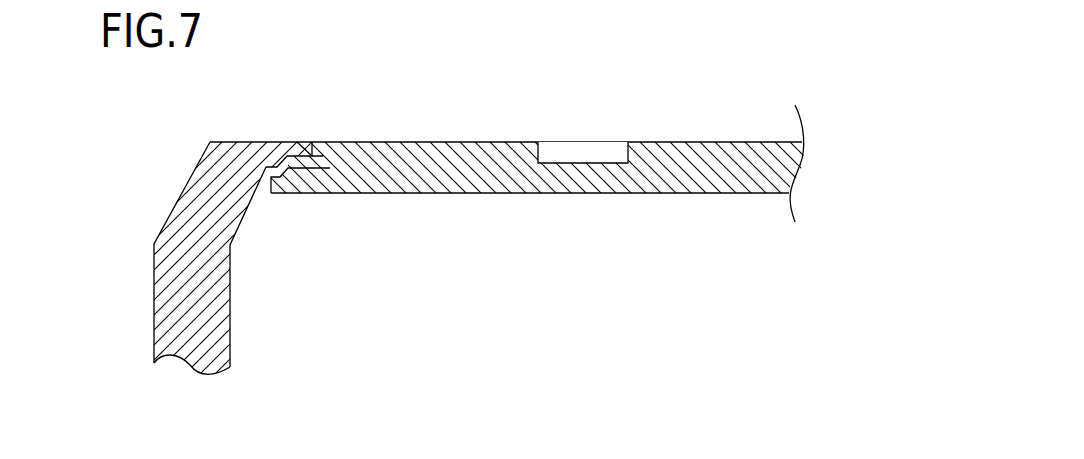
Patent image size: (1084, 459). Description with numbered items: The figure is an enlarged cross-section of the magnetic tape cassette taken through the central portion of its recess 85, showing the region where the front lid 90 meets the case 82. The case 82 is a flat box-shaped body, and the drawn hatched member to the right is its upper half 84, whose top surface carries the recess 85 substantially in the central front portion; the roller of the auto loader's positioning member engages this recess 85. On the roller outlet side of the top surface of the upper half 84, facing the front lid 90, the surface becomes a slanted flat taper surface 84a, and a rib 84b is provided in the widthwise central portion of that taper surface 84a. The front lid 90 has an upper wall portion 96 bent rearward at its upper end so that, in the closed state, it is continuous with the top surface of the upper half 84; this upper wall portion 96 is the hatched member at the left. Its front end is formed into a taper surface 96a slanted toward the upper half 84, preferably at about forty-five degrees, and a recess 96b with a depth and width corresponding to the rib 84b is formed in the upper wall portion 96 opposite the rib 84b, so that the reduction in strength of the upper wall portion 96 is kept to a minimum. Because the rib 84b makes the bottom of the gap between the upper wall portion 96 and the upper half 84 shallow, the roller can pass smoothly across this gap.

The case 82 is at (825, 160).
The upper half 84 is at (442, 158).
The taper surface 84a is at (323, 142).
The rib 84b is at (286, 170).
The recess 85 is at (584, 147).
The front lid 90 is at (148, 297).
The upper wall portion 96 is at (233, 142).
The taper surface 96a is at (270, 142).
The recess 96b is at (312, 142).